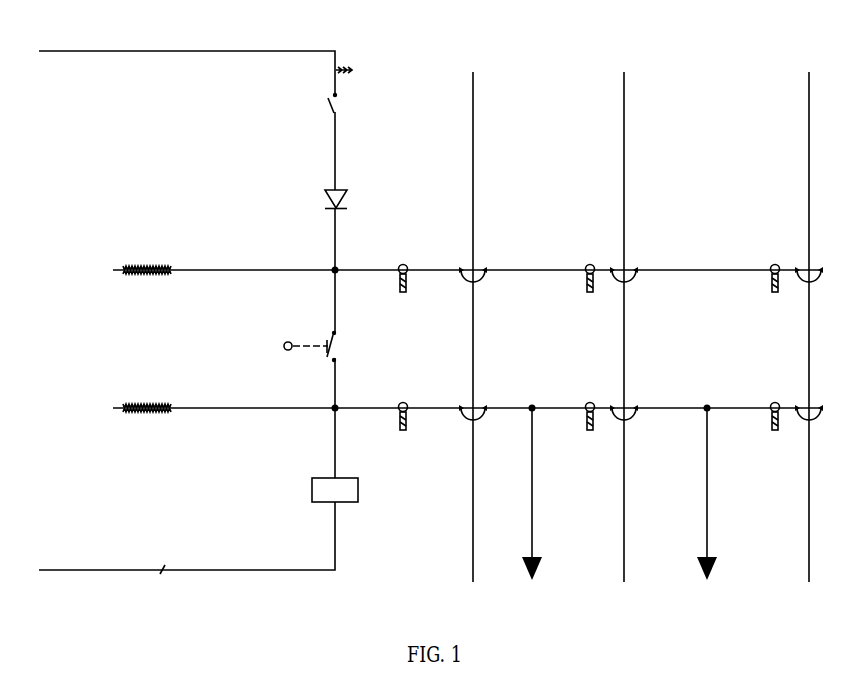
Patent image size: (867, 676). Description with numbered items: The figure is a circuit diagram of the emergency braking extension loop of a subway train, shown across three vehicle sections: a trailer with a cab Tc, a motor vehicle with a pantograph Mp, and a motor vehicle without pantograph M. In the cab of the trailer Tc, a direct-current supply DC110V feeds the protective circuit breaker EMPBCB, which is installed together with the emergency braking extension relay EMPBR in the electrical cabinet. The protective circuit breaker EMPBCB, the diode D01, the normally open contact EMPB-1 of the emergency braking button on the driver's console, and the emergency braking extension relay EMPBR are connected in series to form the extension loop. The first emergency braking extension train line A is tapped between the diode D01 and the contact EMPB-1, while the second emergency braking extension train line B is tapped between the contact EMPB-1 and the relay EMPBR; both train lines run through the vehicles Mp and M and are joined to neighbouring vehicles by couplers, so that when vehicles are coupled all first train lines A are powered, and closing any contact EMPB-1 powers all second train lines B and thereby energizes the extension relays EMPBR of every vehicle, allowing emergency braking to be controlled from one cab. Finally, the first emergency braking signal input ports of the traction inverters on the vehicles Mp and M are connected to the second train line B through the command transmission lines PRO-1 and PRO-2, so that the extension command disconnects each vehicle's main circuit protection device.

The DC 110V power supply DC110V is at (187, 62).
The trailer with a cab Tc is at (390, 294).
The motor vehicle with a pantograph Mp is at (588, 294).
The motor vehicle without pantograph M is at (768, 294).
The protective circuit breaker EMPBCB is at (301, 136).
The diode D01 is at (316, 258).
The first emergency braking extension train line A is at (468, 254).
The second emergency braking extension train line B is at (468, 393).
The normally open contact of the emergency braking button EMPB-1 is at (303, 401).
The emergency braking extension relay EMPBR is at (198, 522).
The emergency braking extension command transmission line PRO-1 is at (531, 512).
The emergency braking extension command transmission line PRO-2 is at (706, 512).